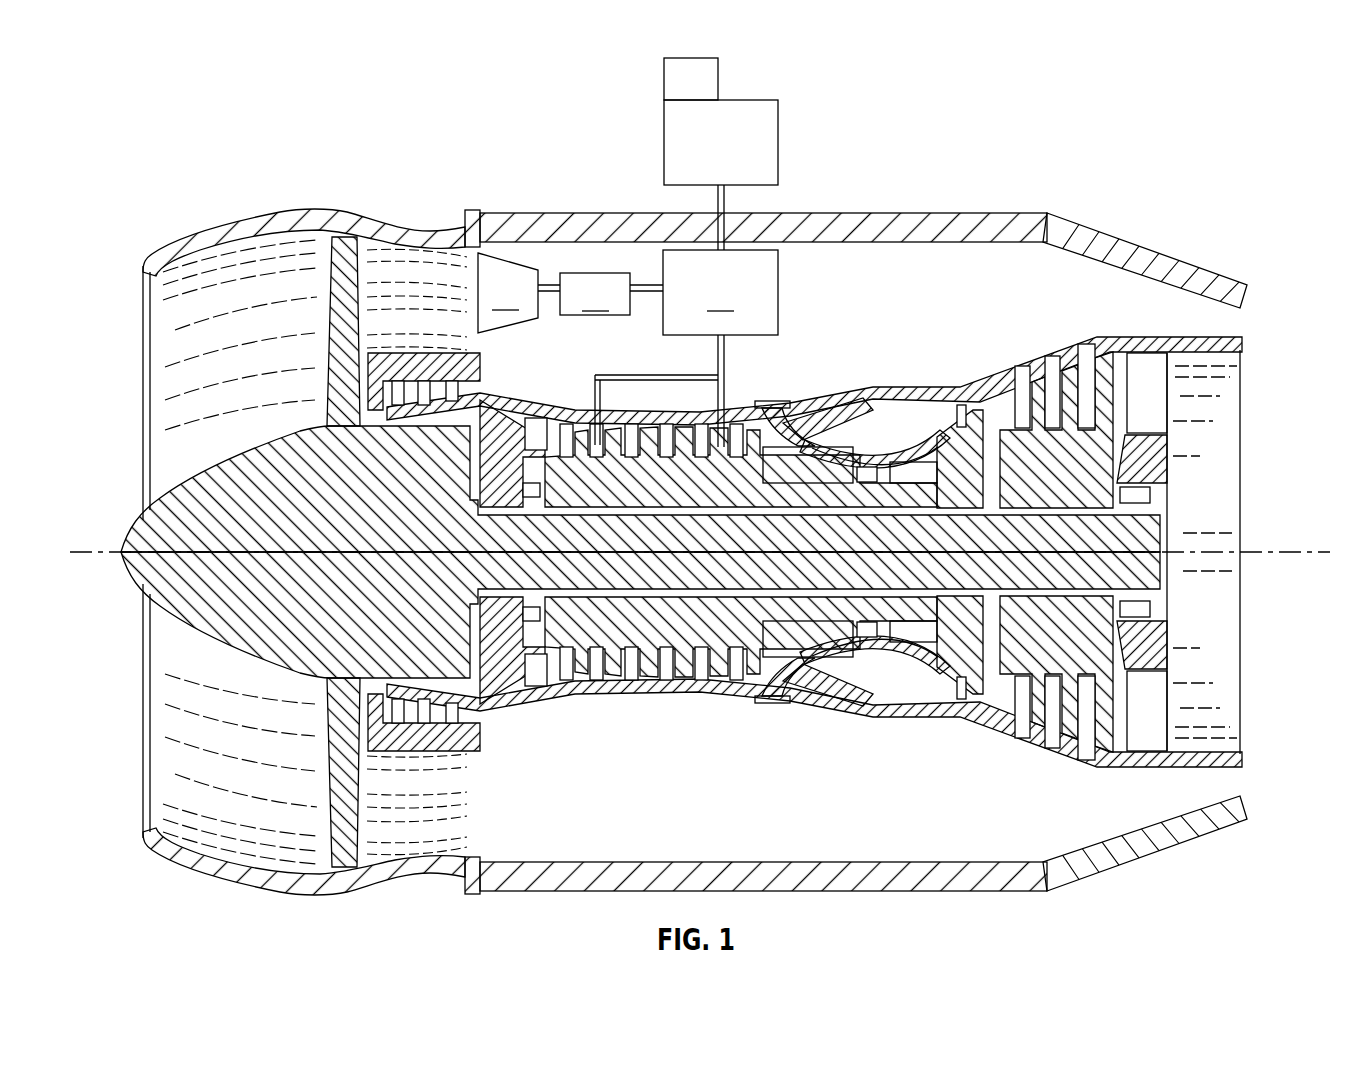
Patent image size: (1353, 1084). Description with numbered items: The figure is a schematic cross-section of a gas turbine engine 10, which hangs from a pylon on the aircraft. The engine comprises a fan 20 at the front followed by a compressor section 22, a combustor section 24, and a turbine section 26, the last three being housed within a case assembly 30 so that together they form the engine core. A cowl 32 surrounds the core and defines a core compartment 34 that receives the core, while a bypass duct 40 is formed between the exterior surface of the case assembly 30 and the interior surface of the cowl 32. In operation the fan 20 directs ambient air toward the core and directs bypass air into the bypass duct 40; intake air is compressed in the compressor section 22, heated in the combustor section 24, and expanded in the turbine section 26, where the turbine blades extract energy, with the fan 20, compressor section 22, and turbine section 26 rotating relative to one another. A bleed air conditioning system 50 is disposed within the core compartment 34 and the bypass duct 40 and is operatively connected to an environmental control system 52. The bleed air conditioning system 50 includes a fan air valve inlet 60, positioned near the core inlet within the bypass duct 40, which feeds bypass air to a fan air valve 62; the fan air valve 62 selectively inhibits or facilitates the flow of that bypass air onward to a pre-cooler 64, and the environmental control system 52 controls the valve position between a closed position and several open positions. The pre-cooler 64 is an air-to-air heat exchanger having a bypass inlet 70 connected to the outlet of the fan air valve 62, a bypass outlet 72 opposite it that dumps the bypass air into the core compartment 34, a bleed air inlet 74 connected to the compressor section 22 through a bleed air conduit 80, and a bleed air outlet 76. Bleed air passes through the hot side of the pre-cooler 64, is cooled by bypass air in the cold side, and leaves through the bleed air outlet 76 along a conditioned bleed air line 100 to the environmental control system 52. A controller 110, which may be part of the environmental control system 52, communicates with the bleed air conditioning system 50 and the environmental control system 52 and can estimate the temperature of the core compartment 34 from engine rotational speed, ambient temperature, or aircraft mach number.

The gas turbine engine 10 is at (178, 188).
The fan 20 is at (328, 350).
The compressor section 22 is at (567, 703).
The combustor section 24 is at (803, 706).
The turbine section 26 is at (1020, 748).
The case assembly 30 is at (1040, 365).
The cowl 32 is at (1013, 235).
The core compartment 34 is at (598, 834).
The bypass duct 40 is at (862, 307).
The bleed air conditioning system 50 is at (640, 270).
The environmental control system 52 is at (784, 140).
The fan air valve inlet 60 is at (508, 293).
The fan air valve 62 is at (595, 294).
The pre-cooler 64 is at (720, 292).
The bypass inlet 70 is at (663, 287).
The bypass outlet 72 is at (778, 292).
The bleed air inlet 74 is at (727, 338).
The bleed air outlet 76 is at (726, 245).
The bleed air conduit 80 is at (682, 360).
The conditioned bleed air line 100 is at (717, 203).
The controller 110 is at (718, 80).